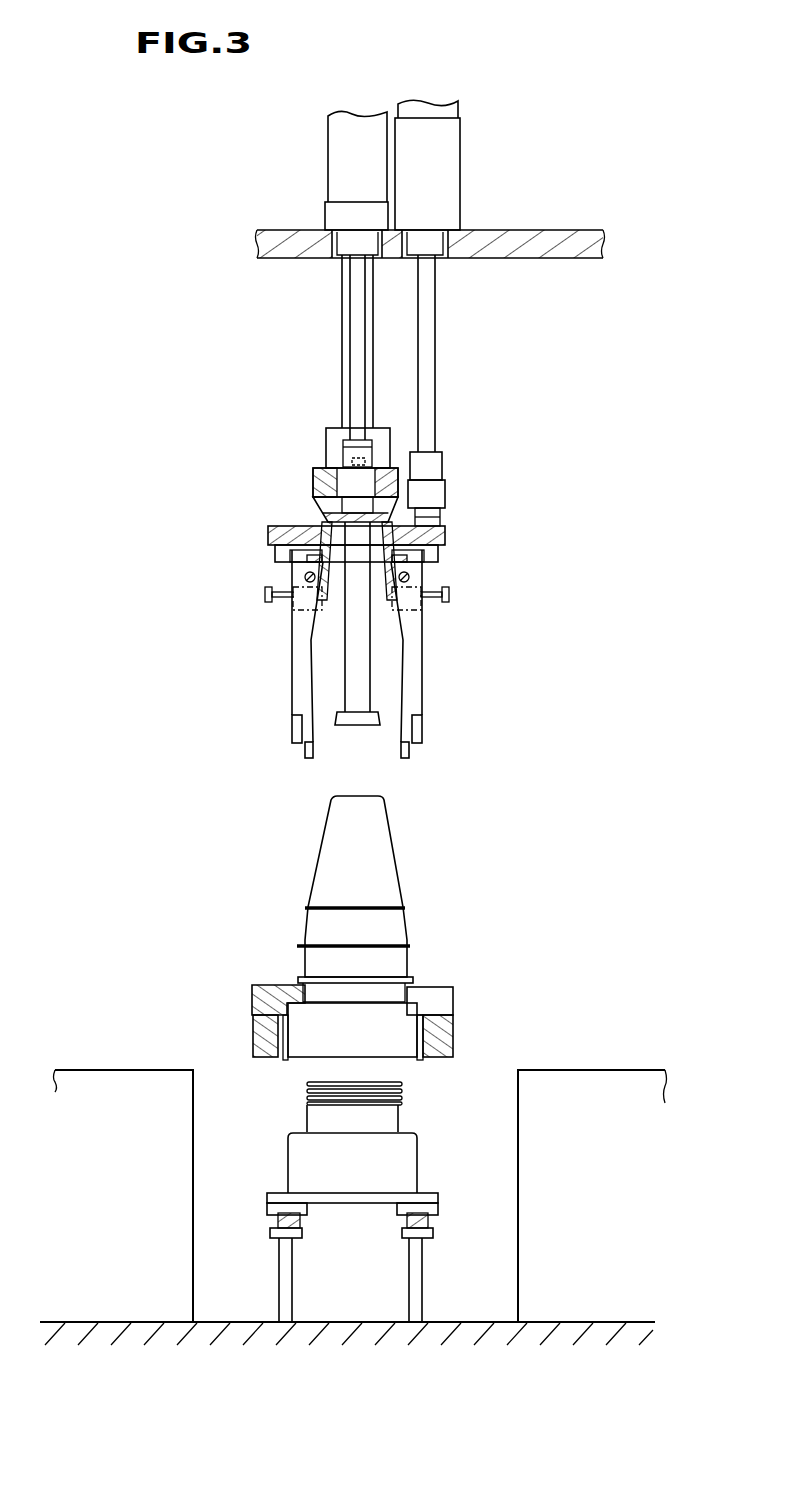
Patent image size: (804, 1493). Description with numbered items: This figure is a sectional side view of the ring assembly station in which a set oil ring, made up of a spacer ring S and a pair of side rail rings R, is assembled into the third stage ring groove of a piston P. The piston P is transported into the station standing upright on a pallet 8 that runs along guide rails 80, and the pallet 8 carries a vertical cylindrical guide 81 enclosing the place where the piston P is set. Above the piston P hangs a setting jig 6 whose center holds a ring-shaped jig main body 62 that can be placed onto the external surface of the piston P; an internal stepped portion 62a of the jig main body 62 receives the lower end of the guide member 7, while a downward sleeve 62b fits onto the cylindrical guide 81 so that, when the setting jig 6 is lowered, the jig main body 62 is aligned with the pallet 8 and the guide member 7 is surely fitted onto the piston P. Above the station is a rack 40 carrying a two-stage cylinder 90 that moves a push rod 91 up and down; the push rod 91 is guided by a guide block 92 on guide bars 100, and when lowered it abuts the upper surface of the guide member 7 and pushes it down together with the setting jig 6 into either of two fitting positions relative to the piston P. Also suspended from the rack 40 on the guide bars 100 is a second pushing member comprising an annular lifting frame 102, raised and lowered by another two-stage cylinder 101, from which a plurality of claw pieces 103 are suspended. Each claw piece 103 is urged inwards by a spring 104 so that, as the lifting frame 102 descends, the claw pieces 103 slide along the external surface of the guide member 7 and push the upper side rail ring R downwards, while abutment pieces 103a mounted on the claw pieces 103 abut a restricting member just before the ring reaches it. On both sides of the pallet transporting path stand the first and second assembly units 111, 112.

The cylinder 90 is at (342, 160).
The cylinder 101 is at (450, 110).
The rack 40 is at (557, 240).
The guide bars 100 is at (342, 317).
The guide block 92 is at (335, 448).
The lifting frame 102 is at (447, 538).
The spring 104 is at (305, 573).
The claw pieces 103 is at (296, 656).
The abutment pieces 103a is at (422, 730).
The push rod 91 is at (360, 715).
The guide member 7 is at (385, 848).
The side rail ring R is at (410, 946).
The spacer ring S is at (375, 1014).
The jig main body 62 is at (258, 992).
The setting jig 6 is at (260, 1048).
The stepped portion 62a is at (352, 1030).
The sleeve 62b is at (290, 1052).
The piston P is at (397, 1118).
The cylindrical guide 81 is at (410, 1153).
The pallet 8 is at (282, 1192).
The guide rails 80 is at (275, 1218).
The second assembly unit 112 is at (107, 1070).
The first assembly unit 111 is at (608, 1070).